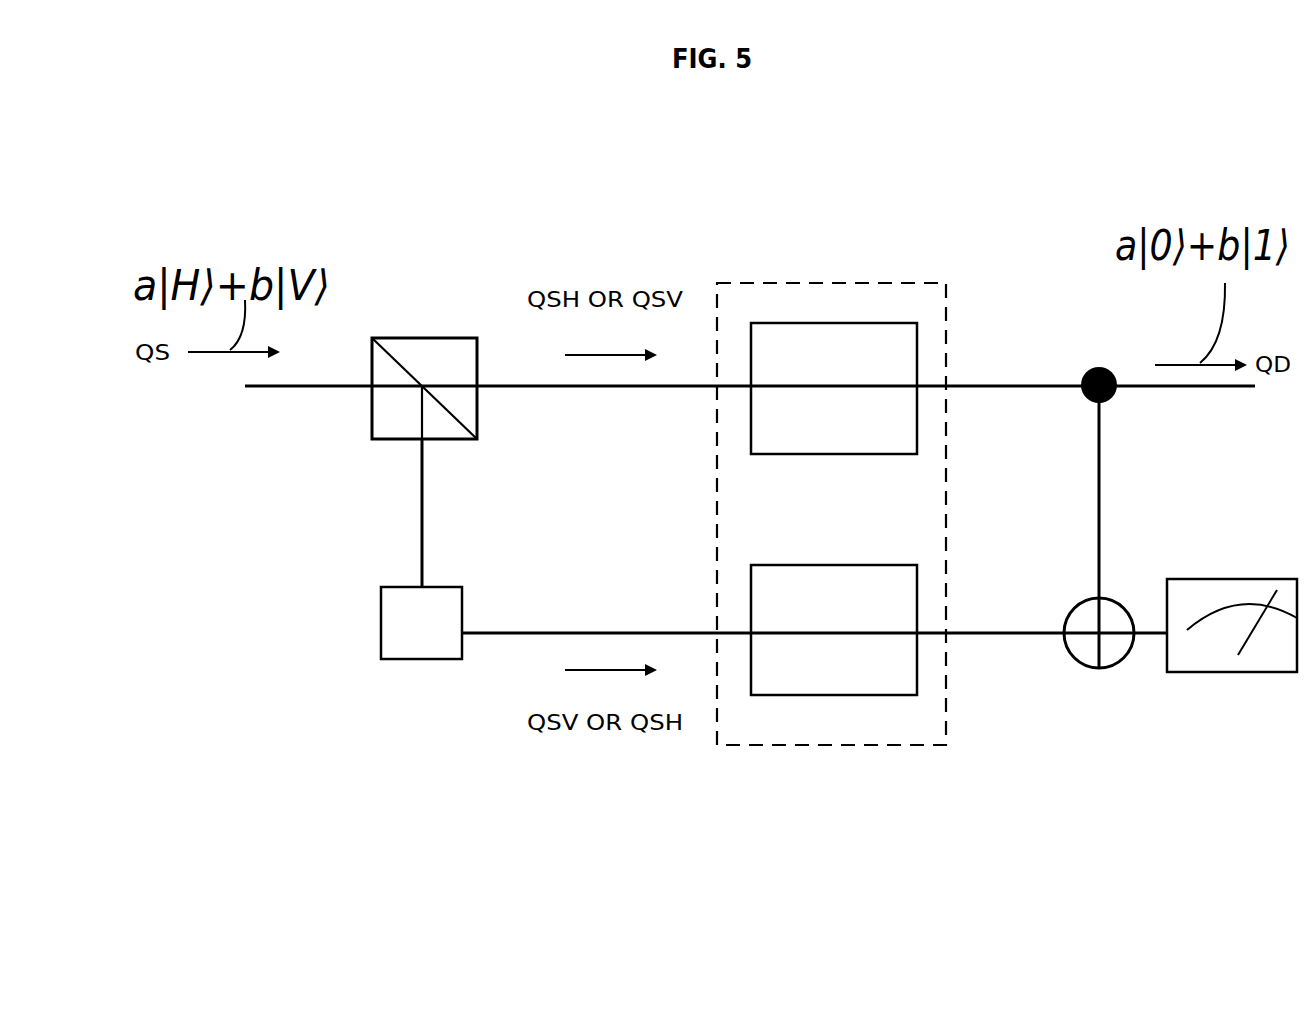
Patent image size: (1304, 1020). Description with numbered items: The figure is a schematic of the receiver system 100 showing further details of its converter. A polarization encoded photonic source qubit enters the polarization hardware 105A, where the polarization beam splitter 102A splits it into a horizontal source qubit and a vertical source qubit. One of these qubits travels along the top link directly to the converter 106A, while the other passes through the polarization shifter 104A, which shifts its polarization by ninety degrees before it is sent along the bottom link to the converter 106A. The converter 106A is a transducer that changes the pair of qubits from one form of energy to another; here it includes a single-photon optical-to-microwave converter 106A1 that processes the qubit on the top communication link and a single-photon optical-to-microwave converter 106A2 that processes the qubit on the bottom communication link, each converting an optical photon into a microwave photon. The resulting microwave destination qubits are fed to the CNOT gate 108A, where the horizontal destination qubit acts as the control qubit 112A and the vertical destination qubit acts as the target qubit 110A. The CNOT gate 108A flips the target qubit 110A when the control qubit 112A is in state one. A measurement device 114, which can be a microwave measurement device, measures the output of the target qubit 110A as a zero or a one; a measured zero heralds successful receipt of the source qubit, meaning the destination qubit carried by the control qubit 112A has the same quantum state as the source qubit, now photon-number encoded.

The receiver system 100 is at (341, 148).
The polarization beam splitter 102A is at (420, 358).
The polarization shifter 104A is at (394, 606).
The polarization hardware 105A is at (407, 536).
The converter 106A is at (831, 473).
The single-photon optical-to-microwave converter 106A1 is at (873, 398).
The single-photon optical-to-microwave converter 106A2 is at (873, 639).
The CNOT gate 108A is at (1004, 517).
The target qubit 110A is at (979, 729).
The control qubit 112A is at (1086, 370).
The measurement device 114 is at (1228, 583).